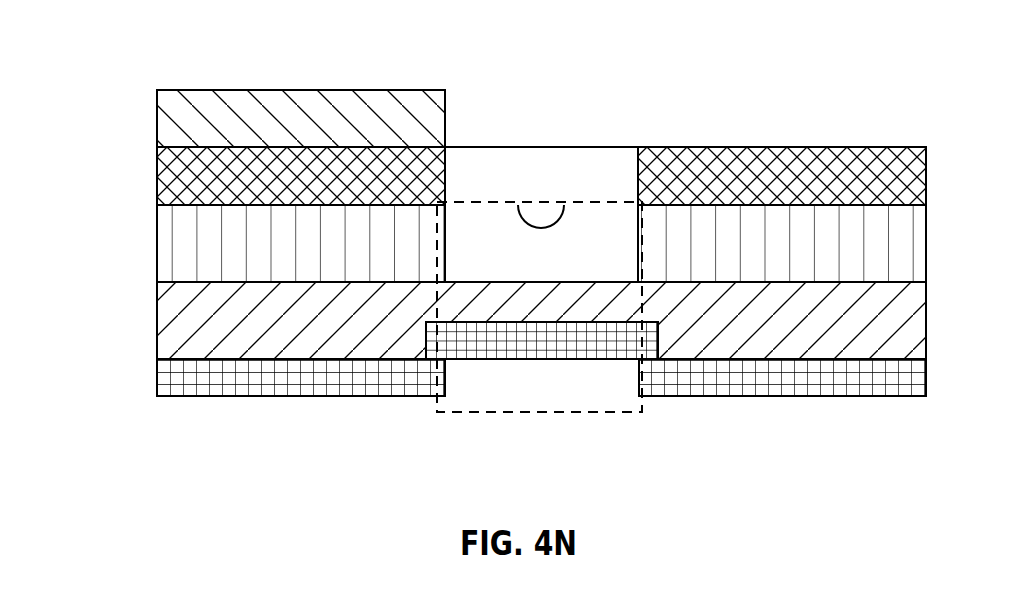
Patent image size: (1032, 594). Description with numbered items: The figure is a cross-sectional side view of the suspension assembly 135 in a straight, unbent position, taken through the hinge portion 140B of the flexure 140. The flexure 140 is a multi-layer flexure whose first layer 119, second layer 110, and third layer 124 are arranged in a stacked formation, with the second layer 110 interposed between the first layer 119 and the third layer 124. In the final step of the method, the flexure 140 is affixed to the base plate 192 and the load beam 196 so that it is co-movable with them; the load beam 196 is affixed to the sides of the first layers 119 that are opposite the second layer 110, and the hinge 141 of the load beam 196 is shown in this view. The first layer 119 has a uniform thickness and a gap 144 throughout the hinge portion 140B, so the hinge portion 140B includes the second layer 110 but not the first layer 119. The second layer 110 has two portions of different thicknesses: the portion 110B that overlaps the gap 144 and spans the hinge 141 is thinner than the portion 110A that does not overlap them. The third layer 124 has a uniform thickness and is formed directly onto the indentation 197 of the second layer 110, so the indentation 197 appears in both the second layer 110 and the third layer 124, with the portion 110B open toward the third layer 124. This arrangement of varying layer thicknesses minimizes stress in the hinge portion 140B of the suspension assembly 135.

The suspension assembly 135 is at (473, 241).
The base plate 192 is at (238, 90).
The load beam 196 is at (157, 160).
The first layer 119 is at (157, 243).
The second layer 110 is at (157, 328).
The portion of the second layer 110A is at (722, 346).
The portion of the second layer 110B is at (467, 330).
The third layer 124 is at (506, 375).
The flexure 140 is at (473, 325).
The hinge portion 140B is at (557, 414).
The hinge 141 is at (537, 228).
The gap 144 is at (605, 252).
The indentation 197 is at (597, 386).